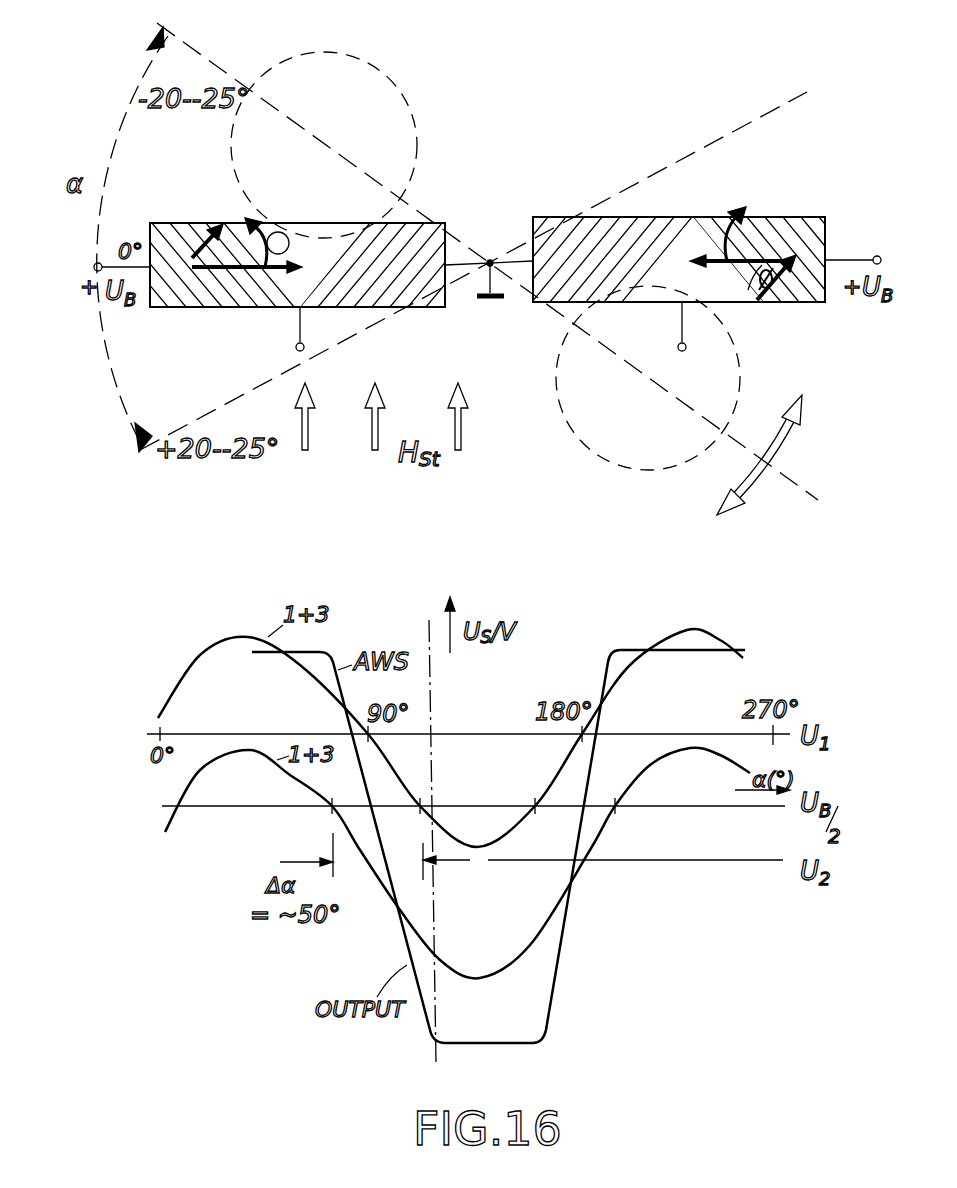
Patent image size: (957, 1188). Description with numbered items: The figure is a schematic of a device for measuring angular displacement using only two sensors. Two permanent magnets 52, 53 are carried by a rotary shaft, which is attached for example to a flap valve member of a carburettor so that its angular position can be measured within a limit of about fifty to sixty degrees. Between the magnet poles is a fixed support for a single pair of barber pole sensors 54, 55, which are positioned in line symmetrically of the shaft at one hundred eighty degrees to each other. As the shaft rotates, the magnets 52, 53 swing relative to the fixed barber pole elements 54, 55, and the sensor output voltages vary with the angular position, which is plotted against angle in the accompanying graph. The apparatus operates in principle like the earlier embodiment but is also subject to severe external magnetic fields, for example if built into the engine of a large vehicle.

The permanent magnet 52 is at (347, 52).
The permanent magnet 53 is at (601, 456).
The barber pole sensor 54 is at (180, 298).
The barber pole sensor 55 is at (807, 223).